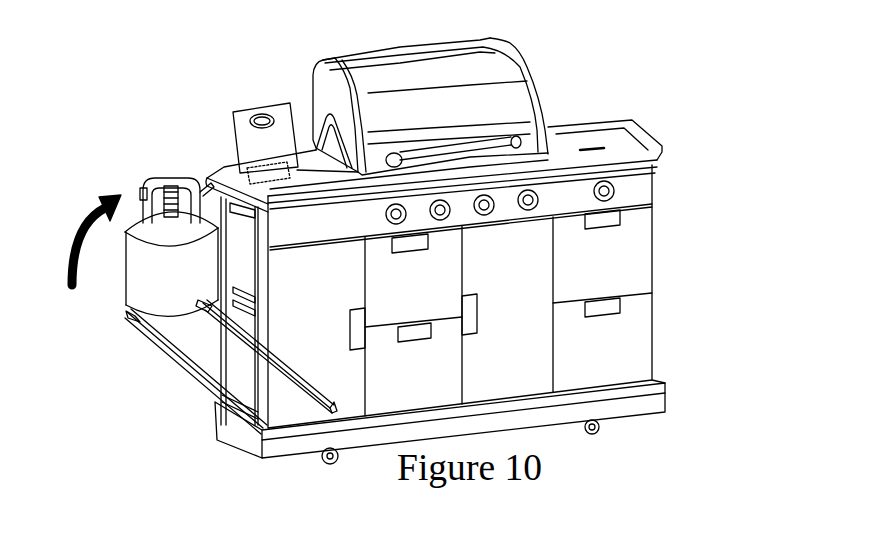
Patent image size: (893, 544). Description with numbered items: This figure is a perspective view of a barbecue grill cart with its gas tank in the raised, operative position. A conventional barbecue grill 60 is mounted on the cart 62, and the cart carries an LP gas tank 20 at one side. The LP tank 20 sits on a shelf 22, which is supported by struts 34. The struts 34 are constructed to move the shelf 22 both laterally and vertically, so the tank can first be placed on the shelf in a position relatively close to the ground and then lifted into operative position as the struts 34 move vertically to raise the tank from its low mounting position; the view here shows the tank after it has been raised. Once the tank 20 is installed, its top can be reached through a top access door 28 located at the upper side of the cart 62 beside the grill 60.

The LP gas tank 20 is at (126, 270).
The shelf 22 is at (133, 320).
The top access door 28 is at (233, 112).
The struts 34 is at (192, 375).
The barbecue grill 60 is at (537, 82).
The cart 62 is at (653, 330).